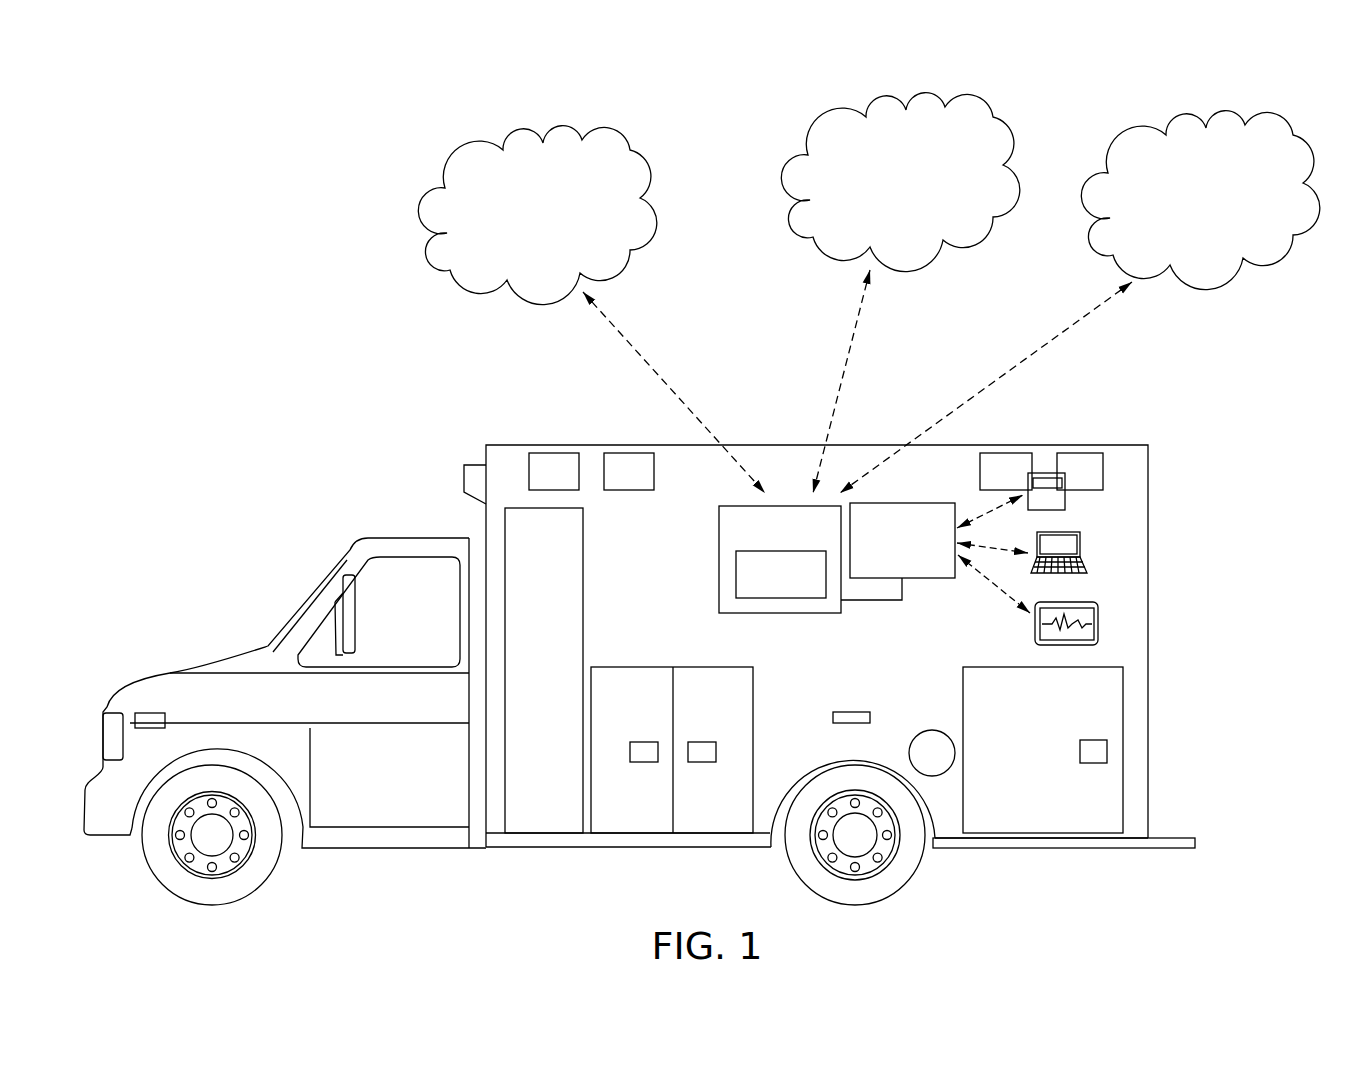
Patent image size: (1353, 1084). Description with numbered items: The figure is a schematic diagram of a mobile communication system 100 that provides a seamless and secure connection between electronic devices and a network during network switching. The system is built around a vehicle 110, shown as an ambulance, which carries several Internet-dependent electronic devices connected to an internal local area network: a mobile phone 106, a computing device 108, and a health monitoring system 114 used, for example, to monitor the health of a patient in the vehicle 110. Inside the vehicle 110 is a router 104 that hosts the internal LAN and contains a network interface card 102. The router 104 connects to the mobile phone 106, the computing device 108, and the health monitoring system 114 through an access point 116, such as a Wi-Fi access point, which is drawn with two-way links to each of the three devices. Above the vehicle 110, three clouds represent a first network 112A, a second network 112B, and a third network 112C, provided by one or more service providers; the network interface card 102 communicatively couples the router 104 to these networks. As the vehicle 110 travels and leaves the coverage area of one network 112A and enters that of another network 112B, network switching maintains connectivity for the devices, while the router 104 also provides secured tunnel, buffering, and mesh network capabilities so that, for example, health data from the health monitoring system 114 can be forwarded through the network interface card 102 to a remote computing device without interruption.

The mobile communication system 100 is at (556, 76).
The network interface card 102 is at (734, 575).
The router 104 is at (717, 533).
The mobile phone 106 is at (1070, 502).
The computing device 108 is at (1082, 542).
The vehicle 110 is at (308, 588).
The network 112A is at (427, 238).
The network 112B is at (807, 130).
The network 112C is at (1095, 250).
The health monitoring system 114 is at (1098, 622).
The access point 116 is at (915, 578).